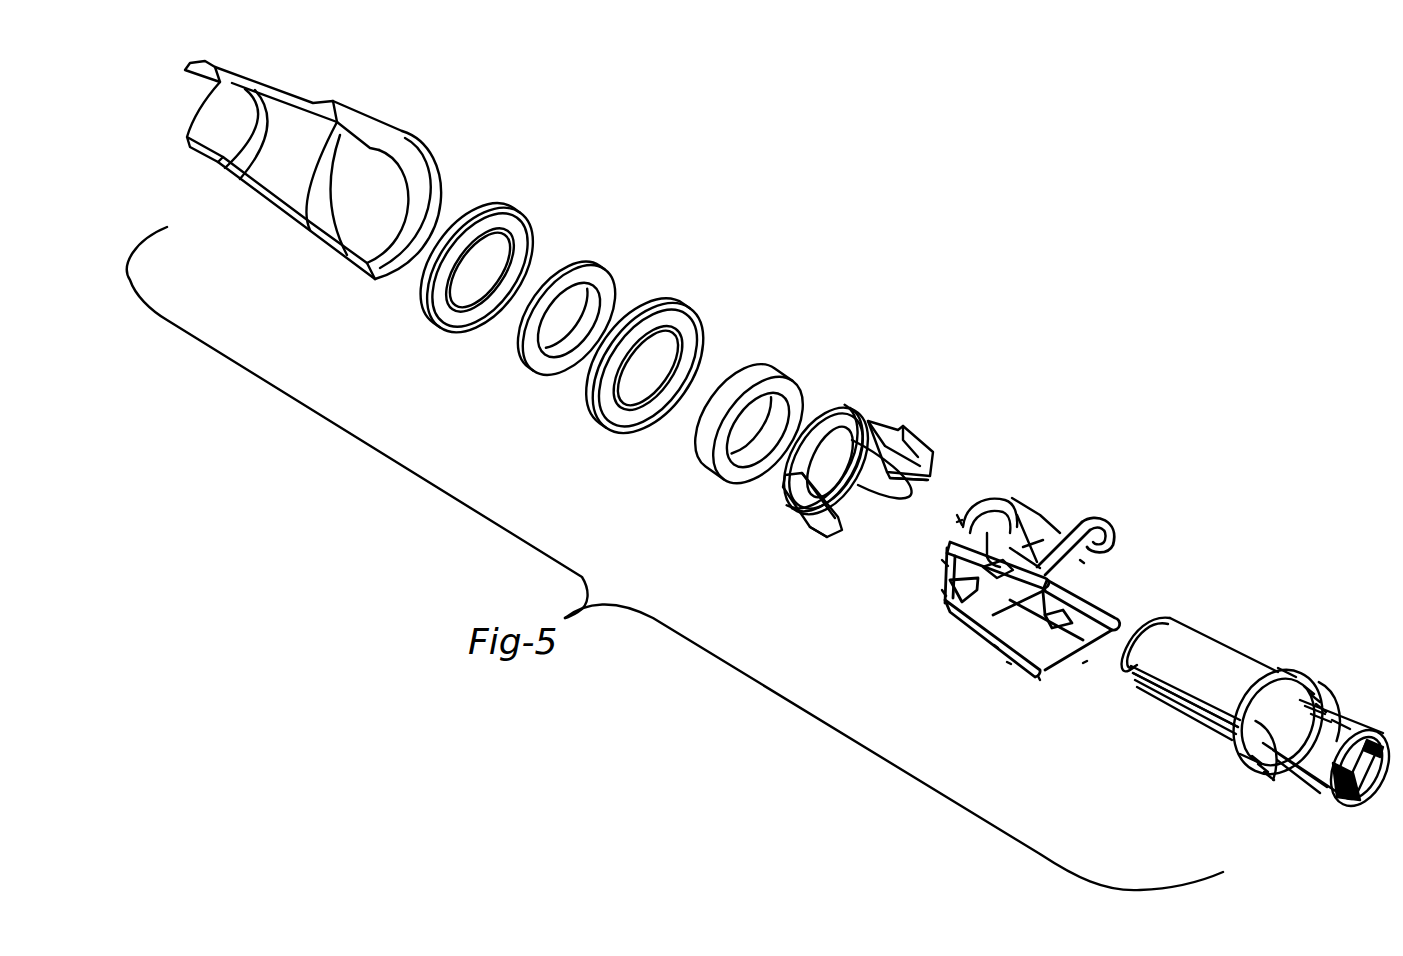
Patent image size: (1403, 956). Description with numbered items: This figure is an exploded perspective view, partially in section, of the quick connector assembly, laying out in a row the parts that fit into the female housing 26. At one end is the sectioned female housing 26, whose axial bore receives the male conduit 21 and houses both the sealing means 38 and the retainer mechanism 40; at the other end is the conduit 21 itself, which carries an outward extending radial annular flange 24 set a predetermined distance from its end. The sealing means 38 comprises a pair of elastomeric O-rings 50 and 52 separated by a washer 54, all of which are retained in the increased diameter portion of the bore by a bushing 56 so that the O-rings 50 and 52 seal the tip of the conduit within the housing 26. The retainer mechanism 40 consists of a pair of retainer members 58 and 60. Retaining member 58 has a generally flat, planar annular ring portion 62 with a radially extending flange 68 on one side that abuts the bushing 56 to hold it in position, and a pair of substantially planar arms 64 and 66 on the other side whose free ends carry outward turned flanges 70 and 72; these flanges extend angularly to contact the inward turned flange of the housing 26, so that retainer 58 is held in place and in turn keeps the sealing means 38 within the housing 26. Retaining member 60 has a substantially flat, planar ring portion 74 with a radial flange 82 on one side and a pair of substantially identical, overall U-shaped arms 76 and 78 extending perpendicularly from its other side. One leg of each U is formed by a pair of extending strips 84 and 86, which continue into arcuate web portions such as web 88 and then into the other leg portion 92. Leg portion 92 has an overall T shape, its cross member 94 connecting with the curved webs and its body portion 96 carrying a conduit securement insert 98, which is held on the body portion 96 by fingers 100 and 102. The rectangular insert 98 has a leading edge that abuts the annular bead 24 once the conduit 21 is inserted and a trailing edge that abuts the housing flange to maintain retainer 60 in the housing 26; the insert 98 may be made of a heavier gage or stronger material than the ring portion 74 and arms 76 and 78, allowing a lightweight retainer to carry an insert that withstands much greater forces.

The tubular body 21 is at (1251, 683).
The radial annular flange 24 is at (1300, 671).
The female housing 26 is at (402, 123).
The sealing means 38 is at (522, 165).
The retainer mechanism 40 is at (953, 330).
The O-ring 50 is at (448, 330).
The O-ring 52 is at (627, 438).
The washer 54 is at (547, 375).
The bushing 56 is at (714, 490).
The retainer member 58 is at (771, 574).
The retainer member 60 is at (935, 688).
The annular ring portion 62 is at (840, 407).
The arm 64 is at (785, 493).
The arm 66 is at (890, 475).
The radially extending flange 68 is at (840, 468).
The outward turned flange 70 is at (805, 527).
The outward turned flange 72 is at (933, 460).
The ring portion 74 is at (957, 515).
The arm 76 is at (942, 560).
The arm 78 is at (1007, 662).
The radial flange 82 is at (942, 590).
The extending strip 84 is at (957, 522).
The extending strip 86 is at (1100, 617).
The curved web portion 88 is at (1040, 680).
The leg portion 92 is at (1083, 663).
The cross member 94 is at (1080, 560).
The body portion 96 is at (1063, 540).
The conduit securement insert 98 is at (1043, 515).
The finger 100 is at (990, 540).
The finger 102 is at (1030, 512).